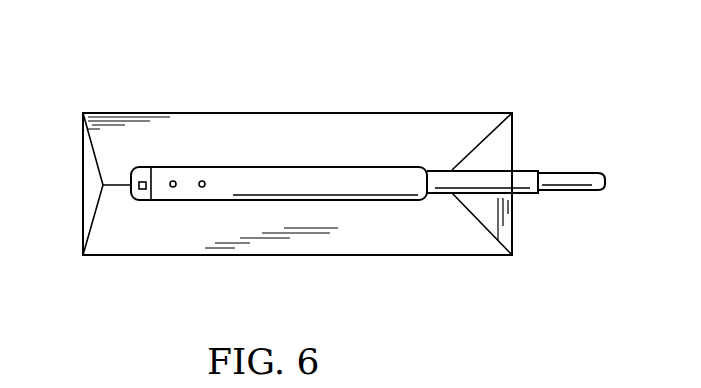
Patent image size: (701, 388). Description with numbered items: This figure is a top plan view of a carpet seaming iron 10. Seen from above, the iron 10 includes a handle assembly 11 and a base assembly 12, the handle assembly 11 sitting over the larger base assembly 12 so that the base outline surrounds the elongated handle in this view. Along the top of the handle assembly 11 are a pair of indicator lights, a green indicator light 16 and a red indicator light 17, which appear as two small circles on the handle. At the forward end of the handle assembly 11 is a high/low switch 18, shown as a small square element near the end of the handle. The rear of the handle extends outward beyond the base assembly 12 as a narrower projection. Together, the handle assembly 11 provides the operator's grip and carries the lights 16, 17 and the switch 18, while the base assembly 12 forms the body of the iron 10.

The carpet seaming iron 10 is at (179, 82).
The handle assembly 11 is at (385, 167).
The base assembly 12 is at (265, 110).
The green indicator light 16 is at (173, 187).
The red indicator light 17 is at (202, 187).
The high/low switch 18 is at (134, 188).